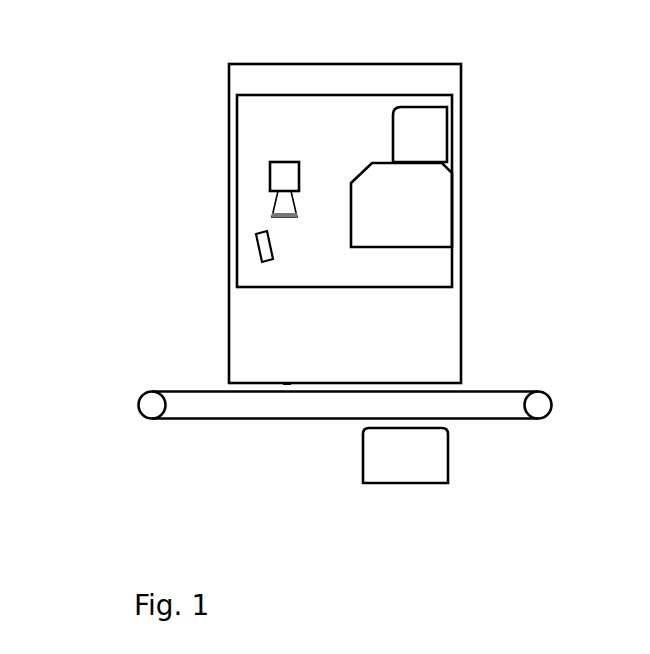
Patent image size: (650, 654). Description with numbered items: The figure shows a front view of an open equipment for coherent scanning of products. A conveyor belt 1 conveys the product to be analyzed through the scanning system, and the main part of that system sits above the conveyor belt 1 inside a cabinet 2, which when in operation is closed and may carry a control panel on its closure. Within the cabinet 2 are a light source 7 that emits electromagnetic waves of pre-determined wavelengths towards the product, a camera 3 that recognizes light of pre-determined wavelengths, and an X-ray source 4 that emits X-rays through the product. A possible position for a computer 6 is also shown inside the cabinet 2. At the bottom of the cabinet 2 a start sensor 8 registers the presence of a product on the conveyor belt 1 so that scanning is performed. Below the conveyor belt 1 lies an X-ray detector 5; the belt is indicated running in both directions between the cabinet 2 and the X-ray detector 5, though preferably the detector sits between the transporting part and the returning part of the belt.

The conveyor belt 1 is at (130, 408).
The cabinet 2 is at (334, 62).
The camera 3 is at (261, 174).
The X-ray source 4 is at (342, 215).
The X-ray detector 5 is at (354, 460).
The computer 6 is at (384, 135).
The light source 7 is at (247, 249).
The start sensor 8 is at (278, 382).